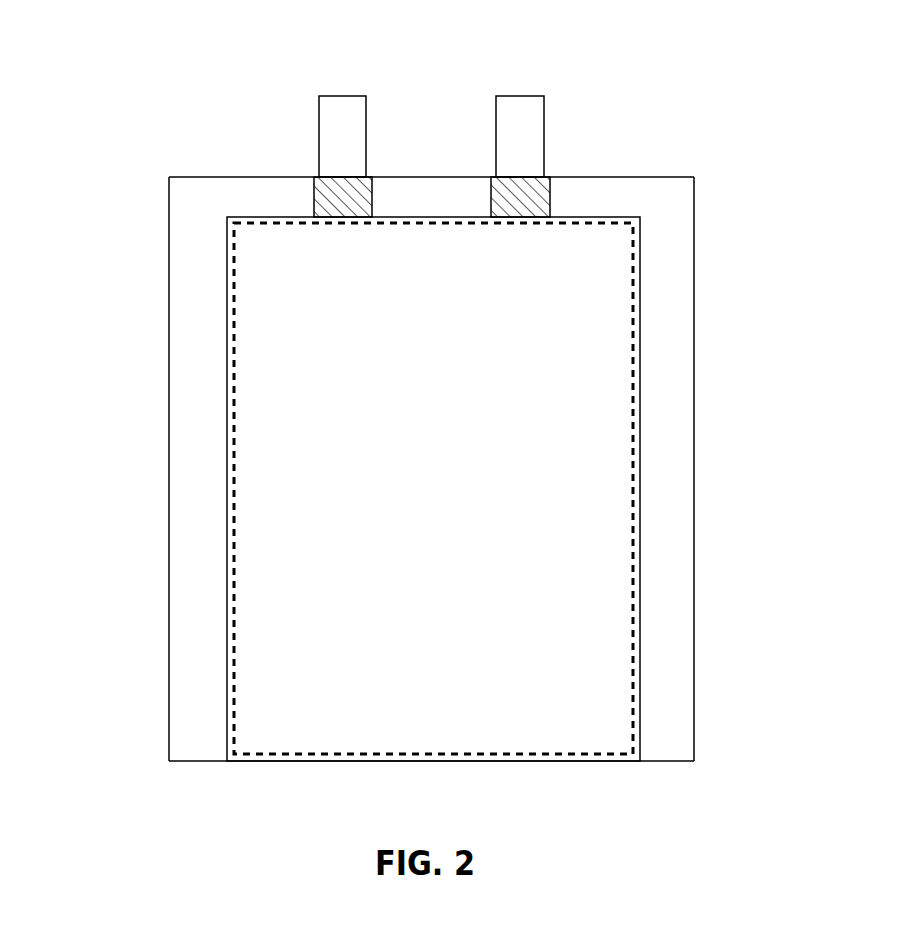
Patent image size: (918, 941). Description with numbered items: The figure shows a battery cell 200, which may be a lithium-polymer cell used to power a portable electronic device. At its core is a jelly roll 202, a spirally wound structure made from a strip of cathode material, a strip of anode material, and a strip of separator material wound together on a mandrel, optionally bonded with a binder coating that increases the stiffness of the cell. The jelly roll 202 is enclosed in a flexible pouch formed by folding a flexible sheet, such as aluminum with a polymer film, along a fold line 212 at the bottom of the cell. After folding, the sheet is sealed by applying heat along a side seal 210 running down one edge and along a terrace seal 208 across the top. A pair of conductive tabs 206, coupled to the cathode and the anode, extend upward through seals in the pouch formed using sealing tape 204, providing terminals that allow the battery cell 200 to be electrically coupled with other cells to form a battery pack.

The battery cell 200 is at (391, 422).
The jelly roll 202 is at (433, 489).
The sealing tape 204 is at (348, 218).
The conductive tabs 206 is at (503, 95).
The terrace seal 208 is at (582, 177).
The side seal 210 is at (169, 460).
The fold line 212 is at (507, 762).